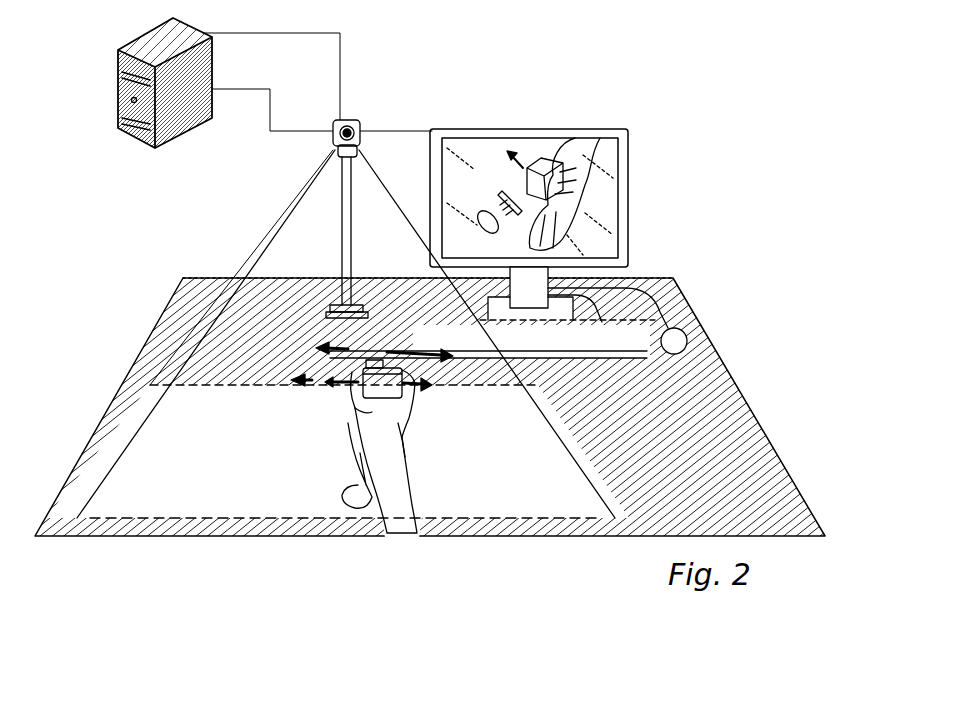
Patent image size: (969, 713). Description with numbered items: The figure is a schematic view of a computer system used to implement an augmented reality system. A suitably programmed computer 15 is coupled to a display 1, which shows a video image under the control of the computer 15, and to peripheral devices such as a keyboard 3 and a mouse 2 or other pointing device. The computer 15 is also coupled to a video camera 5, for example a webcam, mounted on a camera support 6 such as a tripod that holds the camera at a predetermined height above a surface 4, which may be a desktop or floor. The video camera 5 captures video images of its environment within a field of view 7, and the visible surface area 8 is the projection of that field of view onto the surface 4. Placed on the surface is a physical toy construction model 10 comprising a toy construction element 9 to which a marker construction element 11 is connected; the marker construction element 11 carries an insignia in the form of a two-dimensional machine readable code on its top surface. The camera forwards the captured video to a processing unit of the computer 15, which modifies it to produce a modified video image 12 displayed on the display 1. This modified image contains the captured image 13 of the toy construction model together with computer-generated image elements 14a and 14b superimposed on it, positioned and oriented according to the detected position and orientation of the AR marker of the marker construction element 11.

The display 1 is at (585, 110).
The mouse 2 is at (687, 342).
The keyboard 3 is at (647, 360).
The surface 4 is at (762, 425).
The video camera 5 is at (345, 103).
The camera support 6 is at (340, 245).
The field of view 7 is at (290, 200).
The visible surface area 8 is at (263, 518).
The toy construction element 9 is at (323, 405).
The physical toy construction model 10 is at (433, 410).
The marker construction element 11 is at (434, 381).
The modified video image 12 is at (603, 193).
The captured image 13 is at (537, 194).
The computer-generated image element 14a is at (500, 193).
The computer-generated image element 14b is at (495, 232).
The computer 15 is at (153, 47).